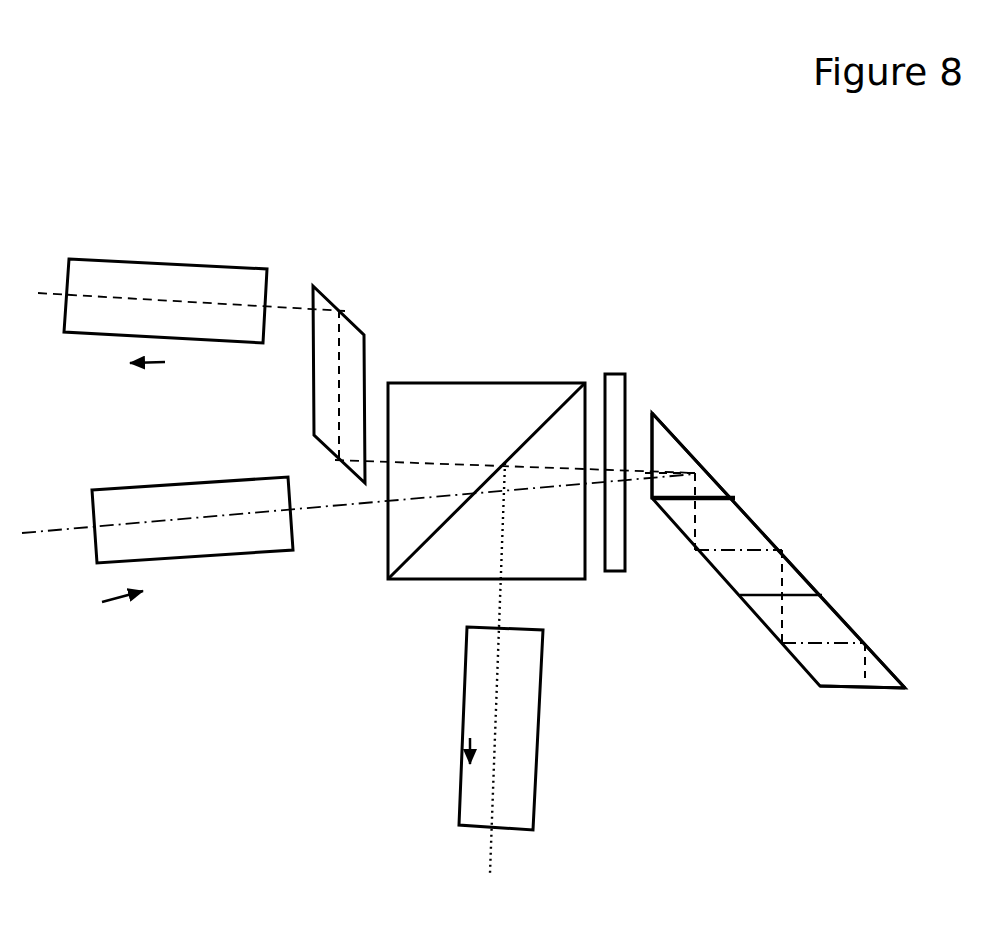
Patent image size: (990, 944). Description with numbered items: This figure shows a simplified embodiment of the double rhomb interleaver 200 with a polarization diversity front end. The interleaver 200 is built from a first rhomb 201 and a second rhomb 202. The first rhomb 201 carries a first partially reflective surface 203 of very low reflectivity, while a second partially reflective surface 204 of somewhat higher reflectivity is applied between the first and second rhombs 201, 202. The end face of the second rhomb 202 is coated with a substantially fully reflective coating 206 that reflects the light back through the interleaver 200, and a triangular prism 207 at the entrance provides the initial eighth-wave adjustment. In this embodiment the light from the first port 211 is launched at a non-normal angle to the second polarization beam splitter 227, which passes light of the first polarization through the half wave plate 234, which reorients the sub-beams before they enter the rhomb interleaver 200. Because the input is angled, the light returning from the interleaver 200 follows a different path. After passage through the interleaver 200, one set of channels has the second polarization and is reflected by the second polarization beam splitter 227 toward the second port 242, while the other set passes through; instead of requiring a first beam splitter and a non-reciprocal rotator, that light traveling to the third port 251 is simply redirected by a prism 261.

The double rhomb interleaver 200 is at (845, 368).
The first rhomb 201 is at (755, 528).
The second rhomb 202 is at (835, 622).
The first partially reflective surface 203 is at (698, 495).
The second partially reflective surface 204 is at (767, 597).
The substantially fully reflective coating 206 is at (882, 690).
The triangular prism 207 is at (673, 450).
The first port 211 is at (217, 603).
The second polarization beam splitter 227 is at (492, 347).
The half wave plate 234 is at (617, 375).
The second port 242 is at (388, 785).
The third port 251 is at (168, 235).
The prism 261 is at (317, 288).